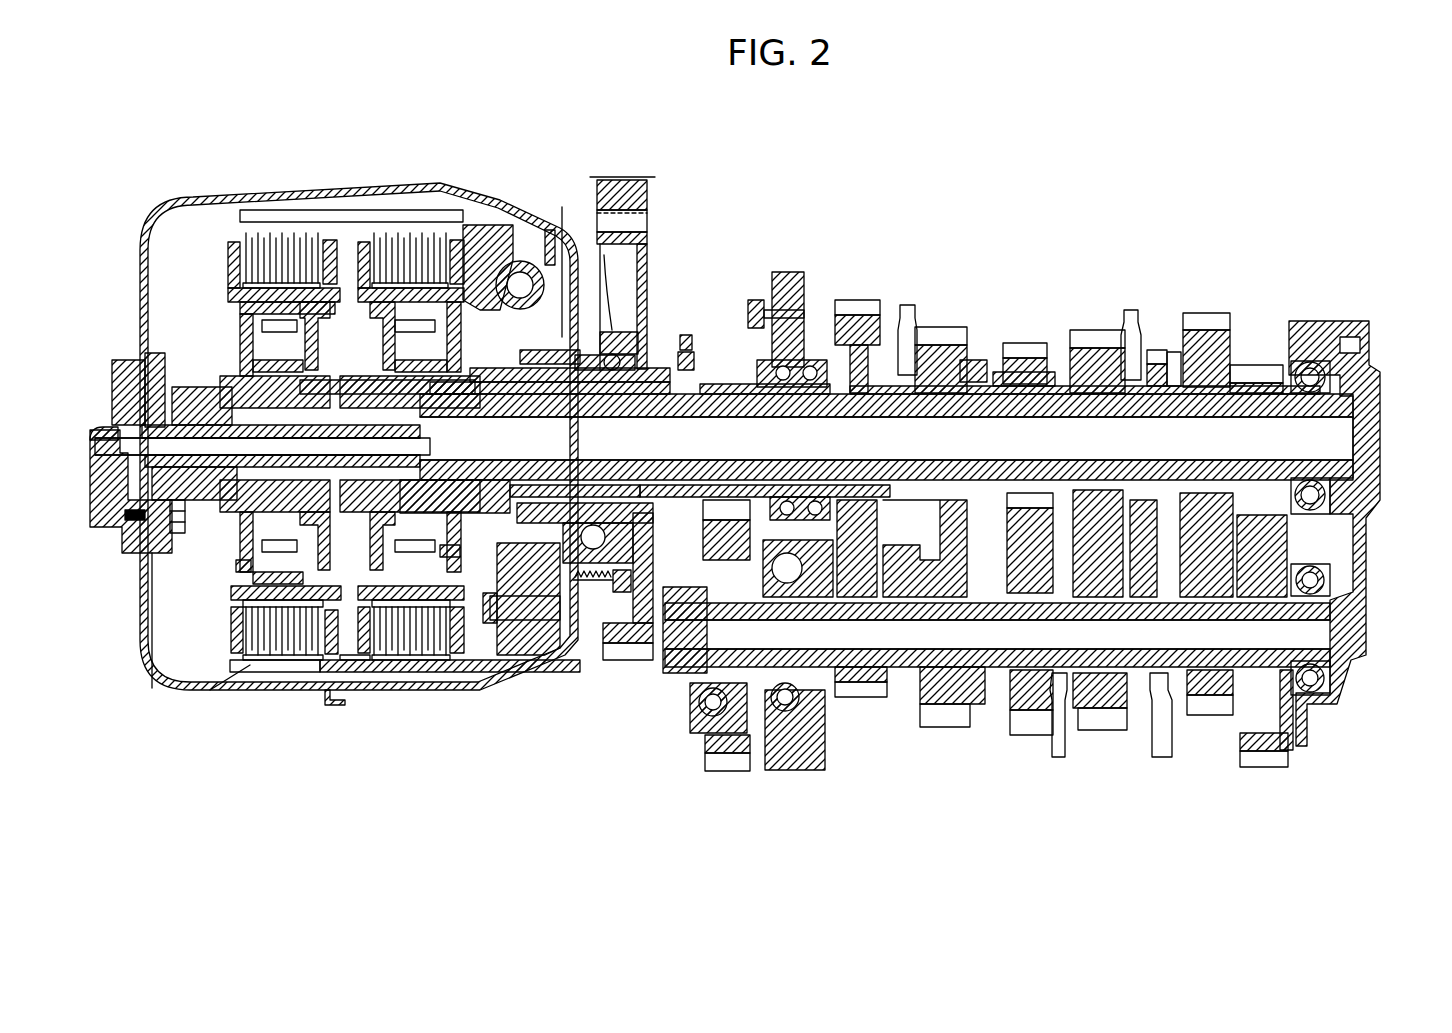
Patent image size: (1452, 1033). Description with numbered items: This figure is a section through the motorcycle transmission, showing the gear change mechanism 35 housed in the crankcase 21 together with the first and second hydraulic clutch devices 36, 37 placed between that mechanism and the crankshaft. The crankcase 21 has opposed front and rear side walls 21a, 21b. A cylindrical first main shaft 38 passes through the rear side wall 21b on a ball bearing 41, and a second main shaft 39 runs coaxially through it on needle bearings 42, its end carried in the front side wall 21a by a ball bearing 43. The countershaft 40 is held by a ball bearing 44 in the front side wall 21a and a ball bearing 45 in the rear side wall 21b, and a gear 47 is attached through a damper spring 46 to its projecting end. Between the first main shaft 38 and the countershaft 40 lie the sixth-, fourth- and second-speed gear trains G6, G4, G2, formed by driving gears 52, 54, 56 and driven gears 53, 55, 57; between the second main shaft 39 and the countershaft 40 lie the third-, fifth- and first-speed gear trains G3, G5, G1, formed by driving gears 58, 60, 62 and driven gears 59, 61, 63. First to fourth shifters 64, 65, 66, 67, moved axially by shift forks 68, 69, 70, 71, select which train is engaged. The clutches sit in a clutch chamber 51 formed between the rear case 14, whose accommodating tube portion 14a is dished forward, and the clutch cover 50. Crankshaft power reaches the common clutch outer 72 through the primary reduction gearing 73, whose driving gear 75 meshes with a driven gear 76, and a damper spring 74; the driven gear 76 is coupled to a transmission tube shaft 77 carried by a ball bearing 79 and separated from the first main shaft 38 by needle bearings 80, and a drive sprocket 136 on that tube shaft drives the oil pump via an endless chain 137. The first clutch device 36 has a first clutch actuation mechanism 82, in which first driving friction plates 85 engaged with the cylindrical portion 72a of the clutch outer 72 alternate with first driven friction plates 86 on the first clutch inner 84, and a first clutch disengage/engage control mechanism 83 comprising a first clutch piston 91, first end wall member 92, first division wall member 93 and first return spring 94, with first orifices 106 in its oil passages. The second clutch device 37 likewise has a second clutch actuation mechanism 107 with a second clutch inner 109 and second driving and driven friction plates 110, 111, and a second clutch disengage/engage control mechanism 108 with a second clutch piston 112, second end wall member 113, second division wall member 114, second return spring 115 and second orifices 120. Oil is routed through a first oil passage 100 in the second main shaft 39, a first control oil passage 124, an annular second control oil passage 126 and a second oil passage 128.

The rear case 14 is at (335, 703).
The accommodating tube portion 14a is at (437, 190).
The crankcase 21 is at (1381, 410).
The front side wall 21a is at (1340, 318).
The rear side wall 21b is at (790, 270).
The gear change mechanism 35 is at (937, 158).
The first hydraulic clutch device 36 is at (360, 253).
The second hydraulic clutch device 37 is at (228, 248).
The first main shaft 38 is at (818, 414).
The second main shaft 39 is at (750, 418).
The countershaft 40 is at (892, 688).
The ball bearing 41 is at (748, 312).
The needle bearings 42 is at (895, 420).
The ball bearing 43 is at (1335, 500).
The ball bearing 44 is at (1322, 678).
The ball bearing 45 is at (795, 770).
The damper spring 46 is at (700, 700).
The gear 47 is at (722, 771).
The clutch cover 50 is at (178, 212).
The clutch chamber 51 is at (196, 256).
The sixth-speed driving gear 52 is at (840, 298).
The sixth-speed driven gear 53 is at (850, 698).
The fourth-speed driving gear 54 is at (933, 325).
The fourth-speed driven gear 55 is at (942, 728).
The second-speed driving gear 56 is at (1010, 342).
The second-speed driven gear 57 is at (1033, 736).
The third-speed driving gear 58 is at (1085, 328).
The third-speed driven gear 59 is at (1105, 732).
The fifth-speed driving gear 60 is at (1200, 311).
The fifth-speed driven gear 61 is at (1216, 716).
The first-speed driving gear 62 is at (1255, 363).
The first-speed driven gear 63 is at (1272, 768).
The first shifter 64 is at (945, 518).
The second shifter 65 is at (1156, 348).
The third shifter 66 is at (1018, 705).
The fourth shifter 67 is at (1175, 712).
The first shift fork 68 is at (907, 303).
The second shift fork 69 is at (1132, 308).
The third shift fork 70 is at (1062, 758).
The fourth shift fork 71 is at (1182, 718).
The clutch outer 72 is at (512, 656).
The cylindrical portion 72a is at (272, 672).
The primary reduction gearing 73 is at (650, 226).
The damper spring 74 is at (562, 230).
The driving gear 75 is at (640, 192).
The driven gear 76 is at (616, 660).
The transmission tube shaft 77 is at (622, 355).
The ball bearing 79 is at (612, 330).
The needle bearings 80 is at (640, 410).
The first clutch actuation mechanism 82 is at (465, 278).
The first clutch disengage/engage control mechanism 83 is at (380, 662).
The first clutch inner 84 is at (528, 272).
The first driving friction plates 85 is at (462, 672).
The first driven friction plates 86 is at (415, 662).
The first clutch piston 91 is at (415, 544).
The first end wall member 92 is at (327, 548).
The first division wall member 93 is at (460, 552).
The first return spring 94 is at (415, 355).
The first oil passage 100 is at (620, 449).
The first orifices 106 is at (482, 500).
The second clutch actuation mechanism 107 is at (230, 624).
The second clutch disengage/engage control mechanism 108 is at (314, 552).
The second clutch inner 109 is at (240, 325).
The second driving friction plates 110 is at (312, 662).
The second driven friction plates 111 is at (240, 670).
The second clutch piston 112 is at (253, 580).
The second end wall member 113 is at (318, 340).
The second division wall member 114 is at (253, 363).
The second return spring 115 is at (240, 303).
The second orifices 120 is at (236, 566).
The first control oil passage 124 is at (432, 440).
The second control oil passage 126 is at (245, 520).
The second oil passage 128 is at (260, 390).
The drive sprocket 136 is at (694, 365).
The endless chain 137 is at (686, 334).
The first-speed gear train G1 is at (1312, 320).
The second-speed gear train G2 is at (1023, 345).
The third-speed gear train G3 is at (1103, 332).
The fourth-speed gear train G4 is at (950, 327).
The fifth-speed gear train G5 is at (1211, 310).
The sixth-speed gear train G6 is at (866, 300).